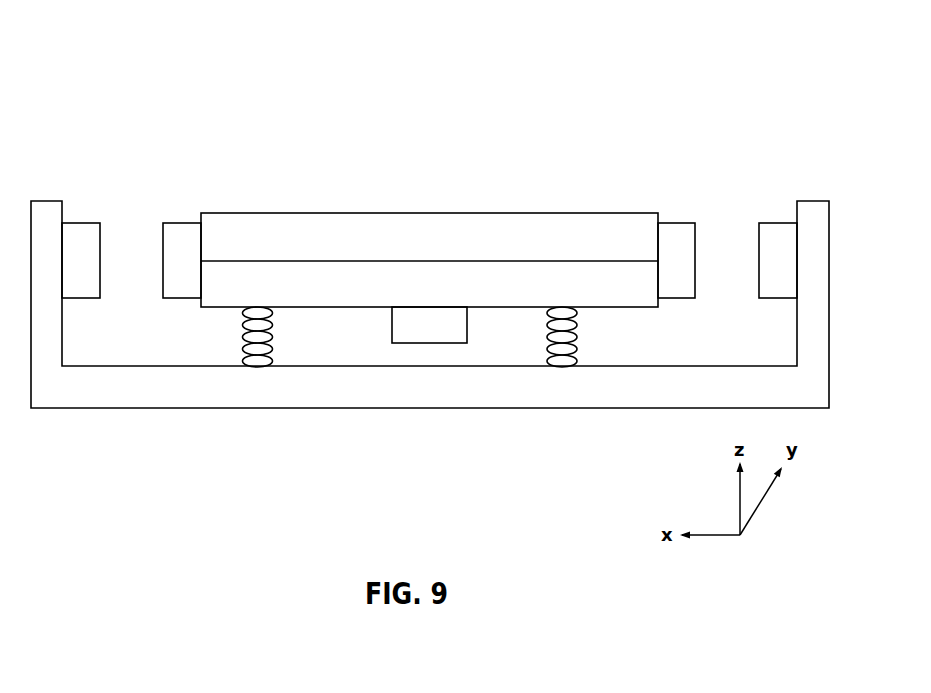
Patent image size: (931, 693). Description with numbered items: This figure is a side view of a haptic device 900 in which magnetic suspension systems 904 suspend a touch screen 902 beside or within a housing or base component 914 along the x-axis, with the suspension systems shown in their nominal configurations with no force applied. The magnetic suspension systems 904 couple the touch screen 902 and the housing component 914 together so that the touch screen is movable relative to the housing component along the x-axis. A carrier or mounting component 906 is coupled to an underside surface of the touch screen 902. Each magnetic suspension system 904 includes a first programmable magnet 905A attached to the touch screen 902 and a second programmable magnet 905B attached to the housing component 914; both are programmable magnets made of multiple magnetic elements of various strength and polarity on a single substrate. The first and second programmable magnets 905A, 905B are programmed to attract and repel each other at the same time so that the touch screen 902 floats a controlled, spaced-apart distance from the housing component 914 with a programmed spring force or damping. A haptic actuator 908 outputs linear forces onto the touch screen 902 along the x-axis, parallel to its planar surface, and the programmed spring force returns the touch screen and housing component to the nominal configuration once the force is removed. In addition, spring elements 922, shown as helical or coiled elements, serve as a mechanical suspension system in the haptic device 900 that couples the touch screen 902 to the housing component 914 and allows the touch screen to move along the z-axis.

The haptic device 900 is at (109, 105).
The touch screen 902 is at (423, 228).
The magnetic suspension system 904 is at (134, 211).
The first programmable magnet 905A is at (183, 235).
The second programmable magnet 905B is at (78, 238).
The carrier or mounting component 906 is at (452, 291).
The haptic actuator 908 is at (452, 336).
The housing or base component 914 is at (422, 393).
The spring element 922 is at (231, 341).